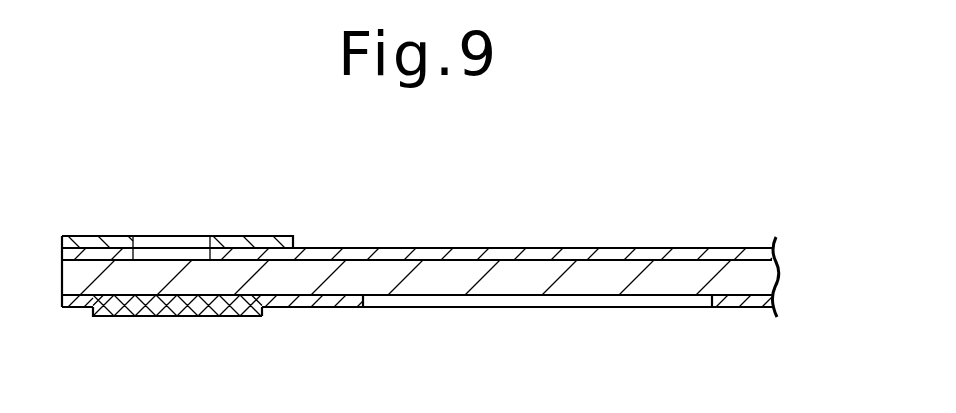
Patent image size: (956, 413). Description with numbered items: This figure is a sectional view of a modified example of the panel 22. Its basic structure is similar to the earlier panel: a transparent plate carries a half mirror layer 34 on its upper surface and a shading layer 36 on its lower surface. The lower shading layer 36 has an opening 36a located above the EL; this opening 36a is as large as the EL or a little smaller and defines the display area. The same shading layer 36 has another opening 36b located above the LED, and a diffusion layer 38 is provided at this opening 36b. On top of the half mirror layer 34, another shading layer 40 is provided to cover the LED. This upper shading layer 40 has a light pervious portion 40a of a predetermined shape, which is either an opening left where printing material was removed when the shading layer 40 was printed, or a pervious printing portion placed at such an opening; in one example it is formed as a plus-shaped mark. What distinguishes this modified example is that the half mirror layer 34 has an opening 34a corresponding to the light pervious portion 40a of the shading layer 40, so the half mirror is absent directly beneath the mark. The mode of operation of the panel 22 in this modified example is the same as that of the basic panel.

The panel 22 is at (561, 193).
The half mirror layer 34 is at (423, 214).
The opening 34a is at (193, 256).
The shading layer 36 is at (417, 342).
The opening 36a is at (560, 304).
The opening 36b is at (250, 309).
The diffusion layer 38 is at (176, 307).
The shading layer 40 is at (176, 203).
The light pervious portion 40a is at (173, 240).